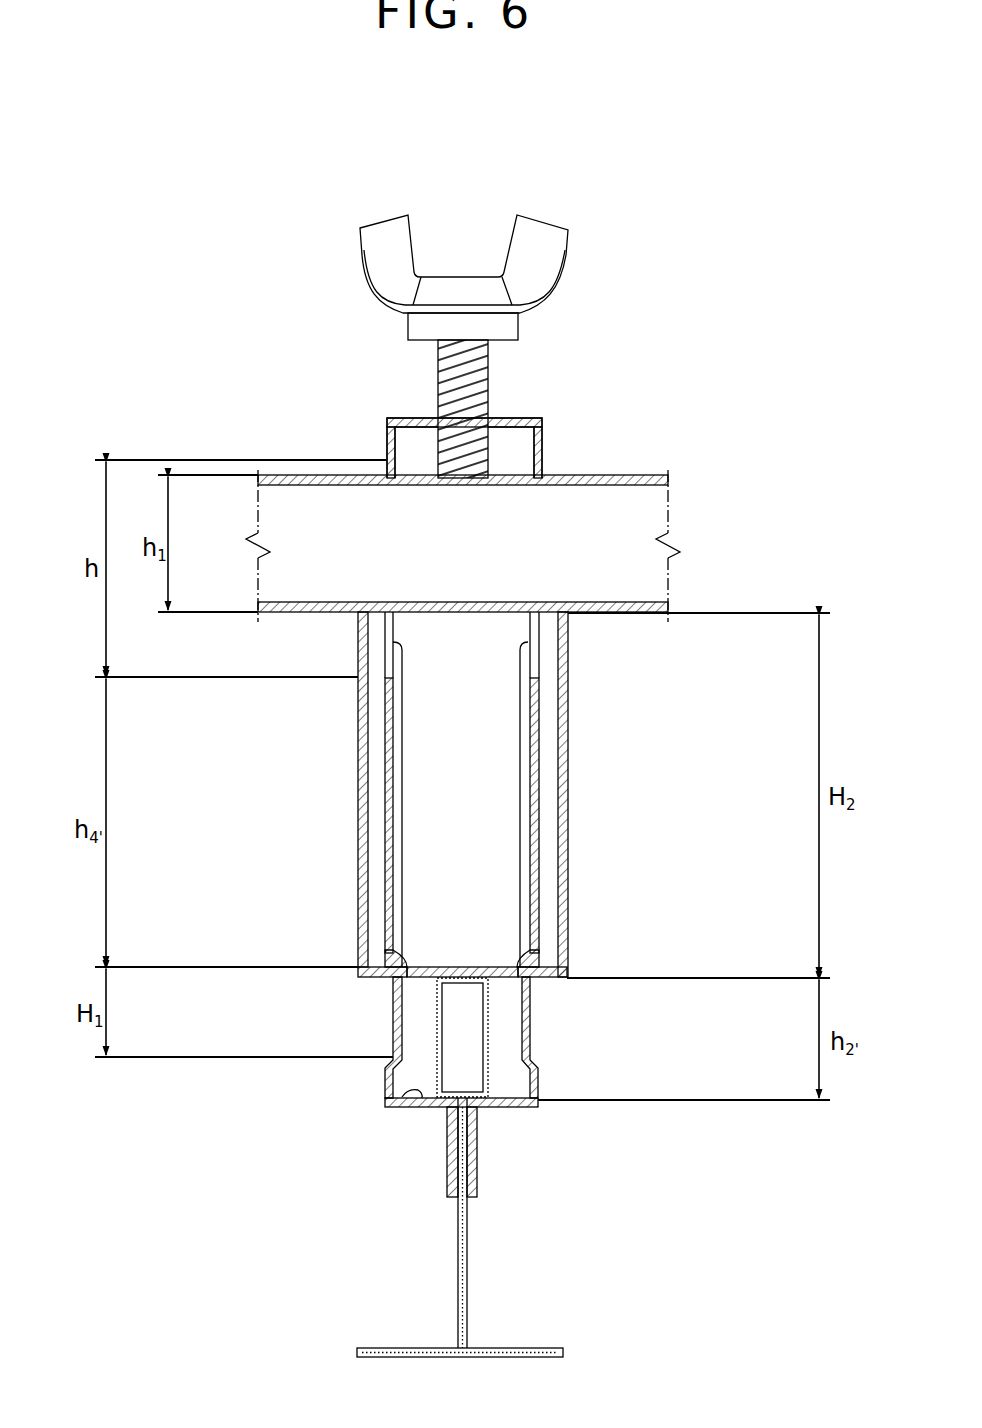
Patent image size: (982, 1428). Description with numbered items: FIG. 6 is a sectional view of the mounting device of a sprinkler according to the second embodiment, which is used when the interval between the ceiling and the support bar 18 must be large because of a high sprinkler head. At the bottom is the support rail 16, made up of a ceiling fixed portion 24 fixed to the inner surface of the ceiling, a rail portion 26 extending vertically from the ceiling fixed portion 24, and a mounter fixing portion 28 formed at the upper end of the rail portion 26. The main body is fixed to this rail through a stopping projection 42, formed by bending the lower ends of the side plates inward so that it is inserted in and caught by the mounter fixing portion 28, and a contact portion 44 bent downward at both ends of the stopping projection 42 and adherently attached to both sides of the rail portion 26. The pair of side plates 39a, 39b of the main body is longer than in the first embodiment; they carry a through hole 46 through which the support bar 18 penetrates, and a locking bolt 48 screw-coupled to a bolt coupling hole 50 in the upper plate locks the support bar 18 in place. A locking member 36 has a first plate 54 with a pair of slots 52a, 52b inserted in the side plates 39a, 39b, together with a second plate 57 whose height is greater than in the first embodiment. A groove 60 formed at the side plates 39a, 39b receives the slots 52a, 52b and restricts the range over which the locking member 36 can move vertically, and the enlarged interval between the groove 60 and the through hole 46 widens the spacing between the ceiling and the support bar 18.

The locking bolt 48 is at (461, 280).
The bolt coupling hole 50 is at (488, 412).
The support bar 18 is at (290, 475).
The through hole 46 is at (385, 640).
The second plate 57 is at (568, 763).
The locking member 36 is at (572, 831).
The first plate 54 is at (430, 971).
The side plate 39a is at (558, 690).
The side plate 39b is at (385, 744).
The slot 52a is at (385, 945).
The slot 52b is at (540, 936).
The groove 60 is at (532, 1017).
The mounter fixing portion 28 is at (437, 1025).
The stopping projection 42 is at (400, 1098).
The contact portion 44 is at (447, 1168).
The support rail 16 is at (452, 1227).
The rail portion 26 is at (468, 1235).
The ceiling fixed portion 24 is at (538, 1348).